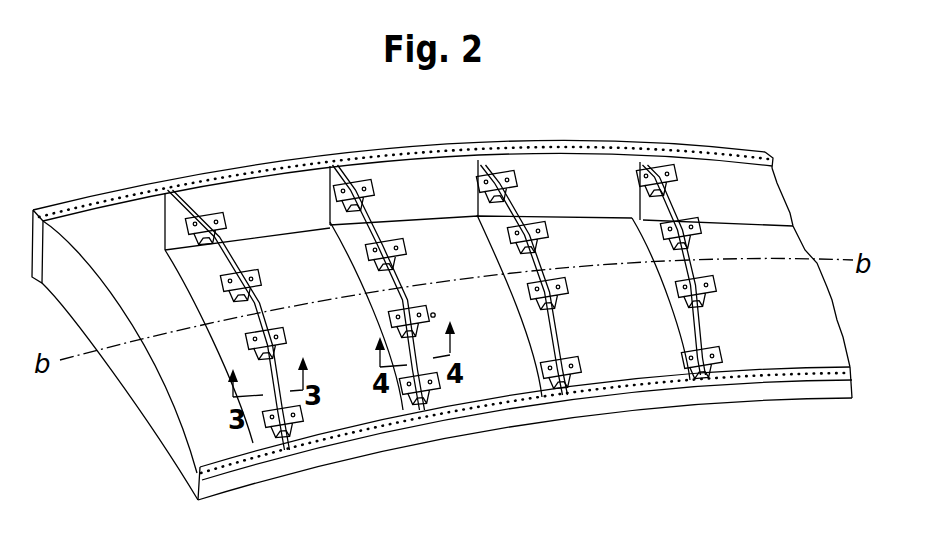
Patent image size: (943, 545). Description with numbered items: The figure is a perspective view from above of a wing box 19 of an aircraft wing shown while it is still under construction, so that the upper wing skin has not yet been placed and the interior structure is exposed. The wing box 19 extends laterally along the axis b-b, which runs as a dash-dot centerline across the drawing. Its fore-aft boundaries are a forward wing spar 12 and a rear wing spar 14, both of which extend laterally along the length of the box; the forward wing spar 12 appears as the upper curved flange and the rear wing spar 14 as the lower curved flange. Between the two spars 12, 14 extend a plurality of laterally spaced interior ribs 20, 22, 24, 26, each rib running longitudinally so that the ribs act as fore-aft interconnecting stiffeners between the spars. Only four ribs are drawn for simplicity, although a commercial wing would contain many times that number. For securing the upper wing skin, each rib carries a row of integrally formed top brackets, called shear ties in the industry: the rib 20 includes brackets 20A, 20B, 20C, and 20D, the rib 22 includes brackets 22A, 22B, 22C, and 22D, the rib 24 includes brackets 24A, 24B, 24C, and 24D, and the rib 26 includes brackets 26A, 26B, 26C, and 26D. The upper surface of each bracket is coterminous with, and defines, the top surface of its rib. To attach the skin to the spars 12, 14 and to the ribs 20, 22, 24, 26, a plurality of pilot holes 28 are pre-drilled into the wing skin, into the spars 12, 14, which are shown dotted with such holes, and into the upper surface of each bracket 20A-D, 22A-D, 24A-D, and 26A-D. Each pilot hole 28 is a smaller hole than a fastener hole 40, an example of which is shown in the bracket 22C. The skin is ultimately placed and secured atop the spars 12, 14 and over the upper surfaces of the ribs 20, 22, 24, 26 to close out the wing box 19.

The forward wing spar 12 is at (115, 235).
The rear wing spar 14 is at (267, 472).
The wing box 19 is at (745, 80).
The rib 20 is at (208, 267).
The bracket 20A is at (232, 222).
The bracket 20B is at (262, 281).
The bracket 20C is at (293, 349).
The bracket 20D is at (302, 413).
The rib 22 is at (368, 242).
The bracket 22A is at (378, 207).
The bracket 22B is at (408, 260).
The bracket 22C is at (418, 305).
The bracket 22D is at (430, 403).
The rib 24 is at (507, 228).
The bracket 24A is at (517, 192).
The bracket 24B is at (548, 246).
The bracket 24C is at (565, 297).
The bracket 24D is at (572, 373).
The rib 26 is at (663, 217).
The bracket 26A is at (677, 190).
The bracket 26B is at (707, 244).
The bracket 26C is at (722, 295).
The bracket 26D is at (722, 366).
The pilot hole 28 is at (203, 172).
The fastener hole 40 is at (435, 315).